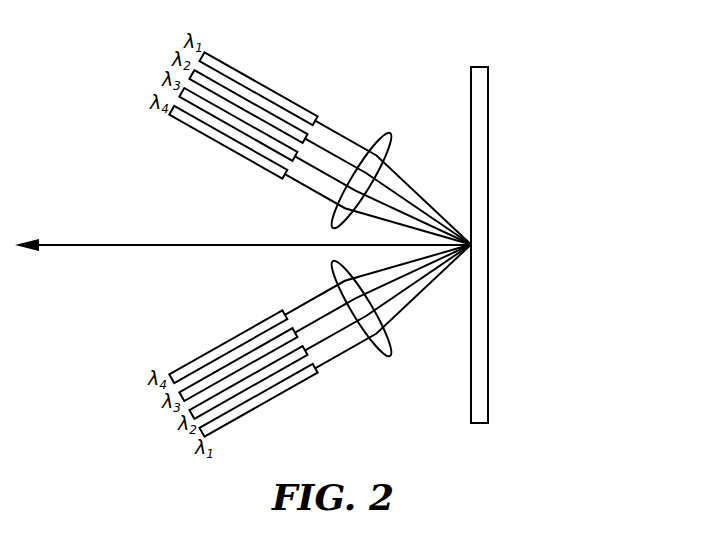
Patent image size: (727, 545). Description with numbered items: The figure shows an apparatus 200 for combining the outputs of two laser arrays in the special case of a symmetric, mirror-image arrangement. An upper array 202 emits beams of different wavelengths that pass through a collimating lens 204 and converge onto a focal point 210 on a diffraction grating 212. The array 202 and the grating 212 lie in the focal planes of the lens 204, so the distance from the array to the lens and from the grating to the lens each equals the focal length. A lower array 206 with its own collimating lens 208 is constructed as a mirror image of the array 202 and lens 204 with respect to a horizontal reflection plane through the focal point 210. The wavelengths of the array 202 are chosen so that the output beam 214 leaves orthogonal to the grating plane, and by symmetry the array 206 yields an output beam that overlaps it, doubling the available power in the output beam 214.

The apparatus 200 is at (350, 455).
The array 202 is at (258, 82).
The collimating lens 204 is at (387, 135).
The array 206 is at (223, 344).
The collimating lens 208 is at (387, 355).
The focal point 210 is at (477, 247).
The diffraction grating 212 is at (488, 117).
The output beam 214 is at (82, 245).